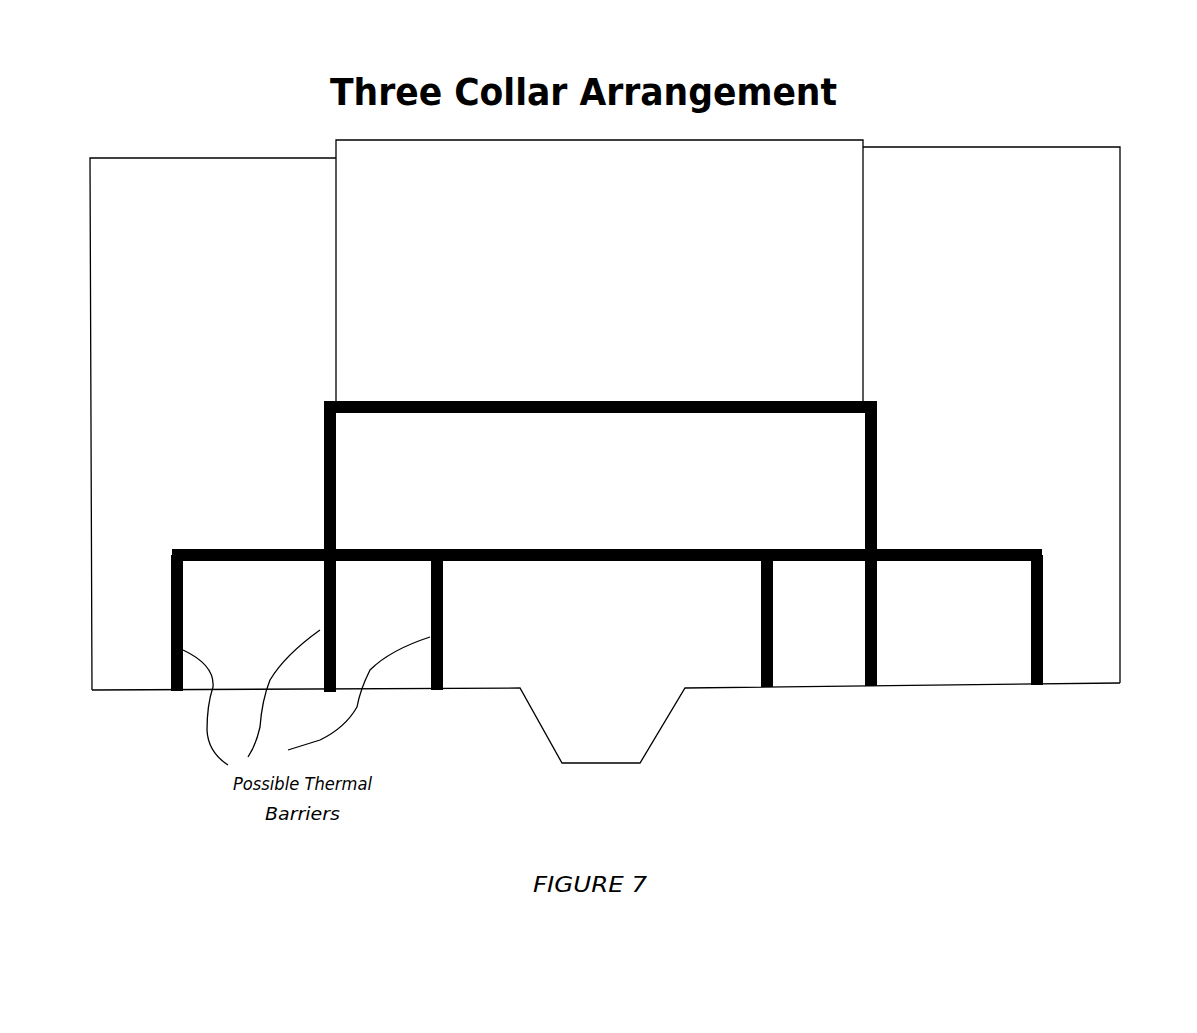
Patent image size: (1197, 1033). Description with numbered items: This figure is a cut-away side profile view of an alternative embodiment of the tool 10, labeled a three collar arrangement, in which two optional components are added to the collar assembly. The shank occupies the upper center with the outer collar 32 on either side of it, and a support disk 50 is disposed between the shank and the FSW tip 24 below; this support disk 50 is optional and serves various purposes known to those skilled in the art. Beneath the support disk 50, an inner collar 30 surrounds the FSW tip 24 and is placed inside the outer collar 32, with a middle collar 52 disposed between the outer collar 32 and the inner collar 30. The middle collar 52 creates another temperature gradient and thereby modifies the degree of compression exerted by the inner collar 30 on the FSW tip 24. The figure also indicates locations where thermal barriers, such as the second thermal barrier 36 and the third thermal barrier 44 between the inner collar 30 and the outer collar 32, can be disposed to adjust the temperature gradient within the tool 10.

The tool 10 is at (950, 124).
The outer collar 32 is at (1095, 345).
The FSW tip 24 is at (713, 673).
The support disk 50 is at (850, 487).
The third thermal barrier 44 is at (977, 547).
The second thermal barrier 36 is at (1042, 621).
The inner collar 30 is at (835, 650).
The middle collar 52 is at (948, 638).